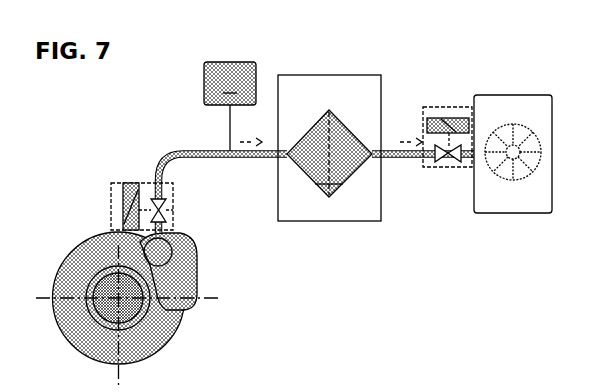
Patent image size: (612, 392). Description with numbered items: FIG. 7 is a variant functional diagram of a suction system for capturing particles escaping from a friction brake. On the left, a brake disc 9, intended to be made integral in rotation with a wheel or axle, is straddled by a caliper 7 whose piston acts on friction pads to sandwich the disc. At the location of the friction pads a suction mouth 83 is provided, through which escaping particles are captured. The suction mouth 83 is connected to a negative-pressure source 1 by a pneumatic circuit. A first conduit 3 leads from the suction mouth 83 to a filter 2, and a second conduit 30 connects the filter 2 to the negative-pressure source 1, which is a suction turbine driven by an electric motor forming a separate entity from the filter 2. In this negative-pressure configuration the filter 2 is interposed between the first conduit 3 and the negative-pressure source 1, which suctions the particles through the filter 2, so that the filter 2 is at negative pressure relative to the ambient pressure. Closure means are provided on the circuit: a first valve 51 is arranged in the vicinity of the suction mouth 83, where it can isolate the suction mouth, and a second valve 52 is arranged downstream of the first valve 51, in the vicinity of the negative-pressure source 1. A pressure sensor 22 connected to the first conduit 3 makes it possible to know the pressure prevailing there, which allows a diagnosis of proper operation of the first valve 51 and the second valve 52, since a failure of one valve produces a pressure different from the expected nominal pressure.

The negative-pressure source 1 is at (519, 88).
The filter 2 is at (352, 69).
The first conduit 3 is at (177, 151).
The caliper 7 is at (212, 278).
The brake disc 9 is at (80, 225).
The pressure sensor 22 is at (258, 68).
The second conduit 30 is at (405, 158).
The first valve 51 is at (127, 183).
The second valve 52 is at (445, 107).
The suction mouth 83 is at (169, 257).